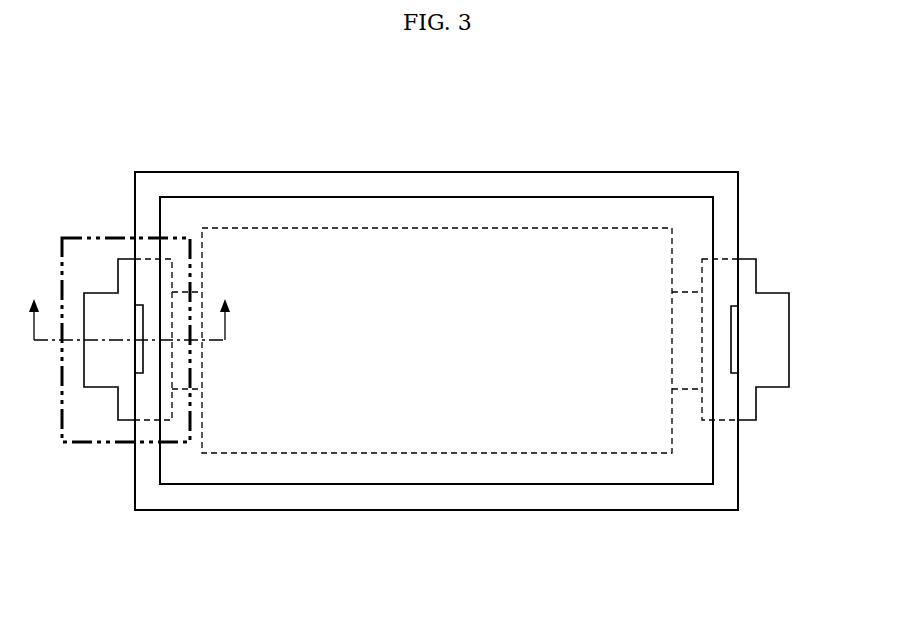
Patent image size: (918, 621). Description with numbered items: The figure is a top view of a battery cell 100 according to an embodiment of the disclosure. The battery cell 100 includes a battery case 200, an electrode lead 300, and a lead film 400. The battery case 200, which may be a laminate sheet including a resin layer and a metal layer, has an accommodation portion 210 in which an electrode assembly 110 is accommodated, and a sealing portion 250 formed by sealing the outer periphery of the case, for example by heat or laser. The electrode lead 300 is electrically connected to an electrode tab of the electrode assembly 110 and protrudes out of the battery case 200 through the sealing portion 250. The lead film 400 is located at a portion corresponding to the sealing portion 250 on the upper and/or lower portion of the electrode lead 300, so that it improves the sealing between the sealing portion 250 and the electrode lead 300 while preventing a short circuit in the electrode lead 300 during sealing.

The battery cell 100 is at (158, 102).
The electrode assembly 110 is at (452, 228).
The battery case 200 is at (436, 382).
The accommodation portion 210 is at (485, 552).
The sealing portion 250 is at (462, 492).
The electrode lead 300 is at (88, 373).
The lead film 400 is at (120, 403).